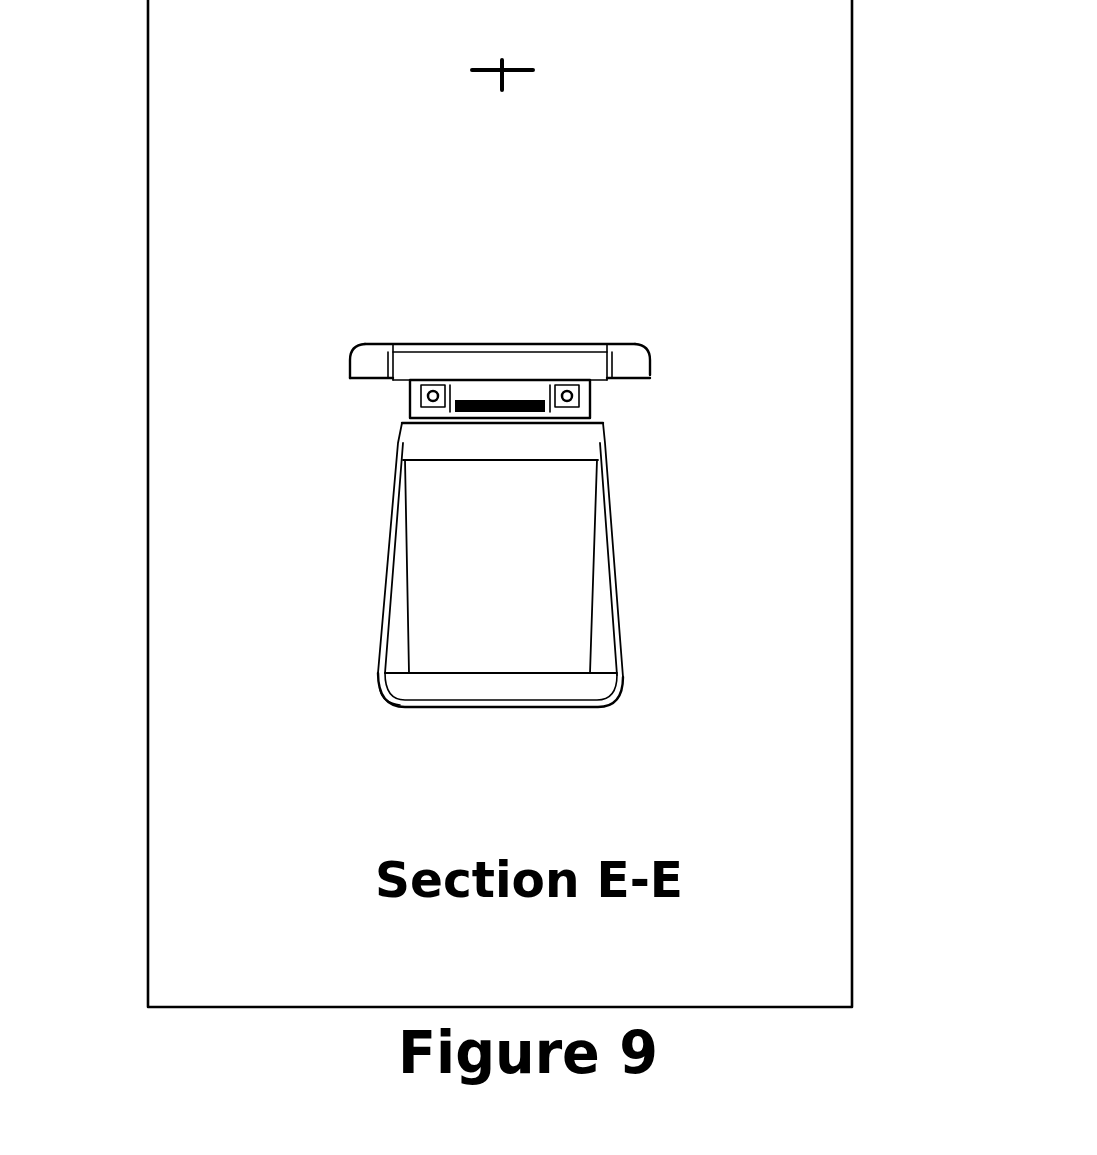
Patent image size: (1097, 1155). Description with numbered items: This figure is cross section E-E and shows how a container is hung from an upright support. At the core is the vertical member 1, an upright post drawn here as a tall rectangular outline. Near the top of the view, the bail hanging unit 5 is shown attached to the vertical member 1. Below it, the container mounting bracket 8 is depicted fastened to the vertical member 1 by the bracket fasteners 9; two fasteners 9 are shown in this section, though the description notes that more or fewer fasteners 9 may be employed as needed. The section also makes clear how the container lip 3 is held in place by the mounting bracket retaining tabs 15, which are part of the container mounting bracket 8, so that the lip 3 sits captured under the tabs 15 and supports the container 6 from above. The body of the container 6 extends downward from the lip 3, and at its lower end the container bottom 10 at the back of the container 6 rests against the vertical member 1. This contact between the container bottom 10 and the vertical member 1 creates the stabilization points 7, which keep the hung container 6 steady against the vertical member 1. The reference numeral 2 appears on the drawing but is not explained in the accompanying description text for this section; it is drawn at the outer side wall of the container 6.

The vertical member 1 is at (773, 400).
The housing 2 is at (623, 603).
The container lip 3 is at (632, 367).
The bail hanging unit 5 is at (503, 88).
The container 6 is at (550, 525).
The stabilization points 7 is at (413, 678).
The container mounting bracket 8 is at (417, 402).
The bracket fasteners 9 is at (590, 400).
The container bottom 10 is at (443, 707).
The mounting bracket retaining tabs 15 is at (485, 343).